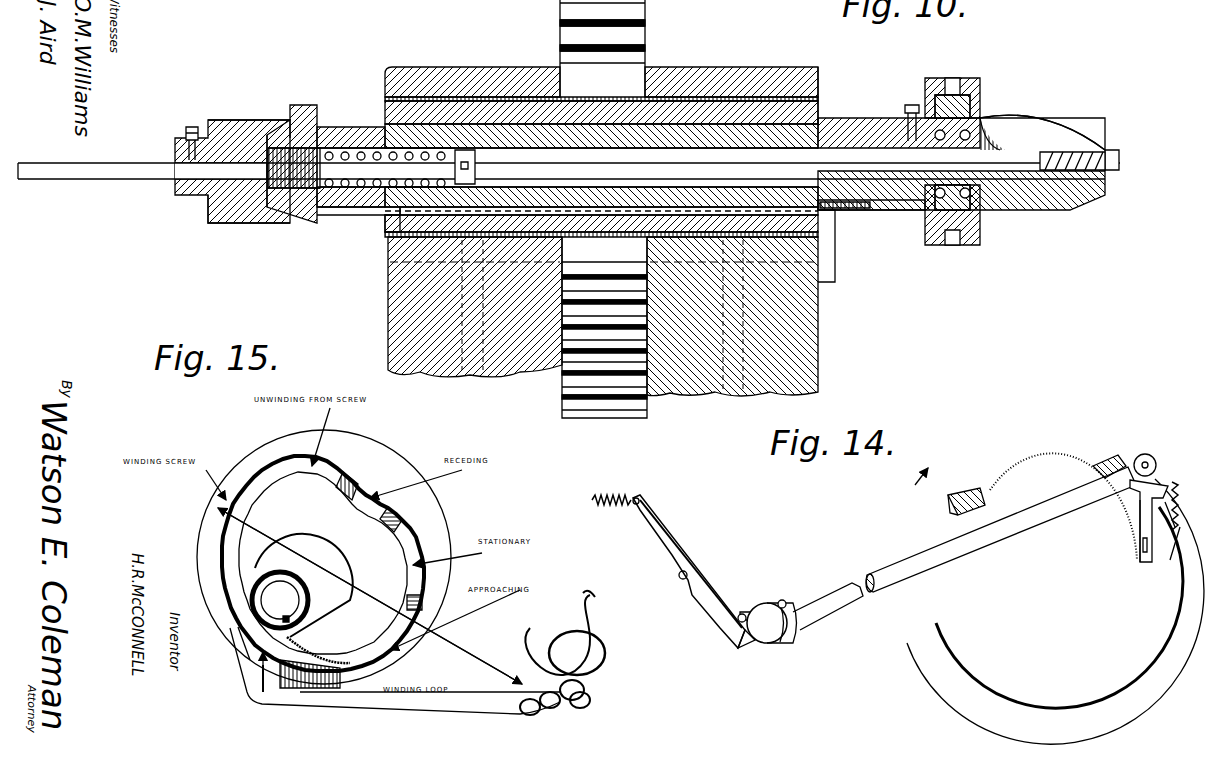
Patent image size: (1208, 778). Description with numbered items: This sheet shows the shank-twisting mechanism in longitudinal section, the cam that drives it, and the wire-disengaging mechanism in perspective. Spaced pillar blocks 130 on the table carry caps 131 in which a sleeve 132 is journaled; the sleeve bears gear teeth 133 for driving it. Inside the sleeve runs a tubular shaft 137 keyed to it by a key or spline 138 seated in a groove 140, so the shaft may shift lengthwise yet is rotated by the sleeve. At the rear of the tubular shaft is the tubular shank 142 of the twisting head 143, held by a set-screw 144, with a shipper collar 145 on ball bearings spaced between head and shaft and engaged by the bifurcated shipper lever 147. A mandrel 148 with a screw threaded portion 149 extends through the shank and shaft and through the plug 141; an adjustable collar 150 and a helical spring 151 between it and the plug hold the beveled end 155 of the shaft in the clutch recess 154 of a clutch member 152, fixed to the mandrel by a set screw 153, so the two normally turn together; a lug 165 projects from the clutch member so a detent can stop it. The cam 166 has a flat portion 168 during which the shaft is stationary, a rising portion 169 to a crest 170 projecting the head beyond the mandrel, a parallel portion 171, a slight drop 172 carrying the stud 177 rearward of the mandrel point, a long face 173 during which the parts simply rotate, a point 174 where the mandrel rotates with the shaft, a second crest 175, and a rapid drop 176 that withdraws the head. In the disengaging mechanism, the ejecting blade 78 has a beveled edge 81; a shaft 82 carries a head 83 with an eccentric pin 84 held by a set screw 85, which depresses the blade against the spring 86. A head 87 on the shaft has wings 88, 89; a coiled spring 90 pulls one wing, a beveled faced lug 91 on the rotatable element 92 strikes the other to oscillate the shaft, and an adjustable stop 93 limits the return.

In FIG. 10, the pillar blocks 130 is at (818, 333).
In FIG. 10, the caps 131 is at (740, 72).
In FIG. 10, the sleeve 132 is at (822, 105).
In FIG. 10, the gear teeth 133 is at (630, 78).
In FIG. 10, the tubular shaft 137 is at (890, 203).
In FIG. 10, the key or spline 138 is at (395, 228).
In FIG. 10, the groove 140 is at (838, 225).
In FIG. 10, the plug 141 is at (330, 135).
In FIG. 10, the tubular shank 142 is at (858, 118).
In FIG. 10, the twisting head 143 is at (1002, 145).
In FIG. 10, the set-screw 144 is at (938, 100).
In FIG. 10, the shipper collar 145 is at (975, 125).
In FIG. 10, the shipper lever 147 is at (960, 246).
In FIG. 10, the shaft or mandrel 148 is at (1015, 172).
In FIG. 10, the screw threaded portion 149 is at (1070, 150).
In FIG. 10, the adjustable collar 150 is at (465, 150).
In FIG. 10, the helical spring 151 is at (358, 190).
In FIG. 10, the clutch member 152 is at (215, 125).
In FIG. 10, the set screw 153 is at (190, 127).
In FIG. 10, the clutch recess 154 is at (272, 205).
In FIG. 10, the beveled end 155 is at (290, 105).
In FIG. 10, the lug 165 is at (312, 112).
In FIG. 10, the stud 177 is at (1138, 124).
In FIG. 15, the cam 166 is at (325, 585).
In FIG. 15, the flat portion 168 is at (425, 530).
In FIG. 15, the rising portion 169 is at (358, 663).
In FIG. 15, the crest 170 is at (287, 692).
In FIG. 15, the parallel portion 171 is at (262, 652).
In FIG. 15, the drop 172 is at (240, 625).
In FIG. 15, the face 173 is at (200, 535).
In FIG. 15, the point 174 is at (258, 470).
In FIG. 15, the crest 175 is at (352, 480).
In FIG. 15, the drop 176 is at (394, 507).
In FIG. 14, the ejecting blade 78 is at (706, 583).
In FIG. 14, the beveled edge 81 is at (740, 650).
In FIG. 14, the shaft 82 is at (990, 533).
In FIG. 14, the head 83 is at (775, 642).
In FIG. 14, the pin 84 is at (752, 610).
In FIG. 14, the set screw 85 is at (785, 602).
In FIG. 14, the spring 86 is at (632, 497).
In FIG. 14, the head 87 is at (1150, 462).
In FIG. 14, the wing 88 is at (1108, 462).
In FIG. 14, the wing 89 is at (1145, 487).
In FIG. 14, the coiled spring 90 is at (1178, 528).
In FIG. 14, the beveled faced lug 91 is at (968, 490).
In FIG. 14, the rotatable element 92 is at (1035, 462).
In FIG. 14, the adjustable stop 93 is at (1145, 530).